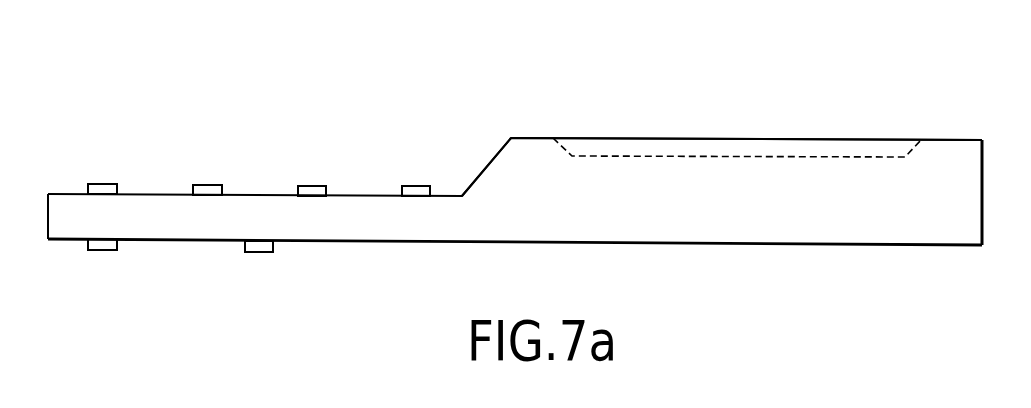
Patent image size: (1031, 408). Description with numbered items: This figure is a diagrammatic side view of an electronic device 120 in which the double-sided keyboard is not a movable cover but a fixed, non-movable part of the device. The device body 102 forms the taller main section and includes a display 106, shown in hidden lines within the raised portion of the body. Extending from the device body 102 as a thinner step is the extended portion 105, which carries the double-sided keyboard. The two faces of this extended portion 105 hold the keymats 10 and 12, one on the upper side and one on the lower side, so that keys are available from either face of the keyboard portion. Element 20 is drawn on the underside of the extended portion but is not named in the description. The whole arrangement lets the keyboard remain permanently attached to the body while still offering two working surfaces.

The keymat 10 is at (212, 121).
The keymat 12 is at (112, 185).
The substrate / circuit board 20 is at (338, 266).
The device body 102 is at (838, 218).
The extended portion 105 is at (452, 220).
The display 106 is at (853, 148).
The electronic device 120 is at (749, 112).